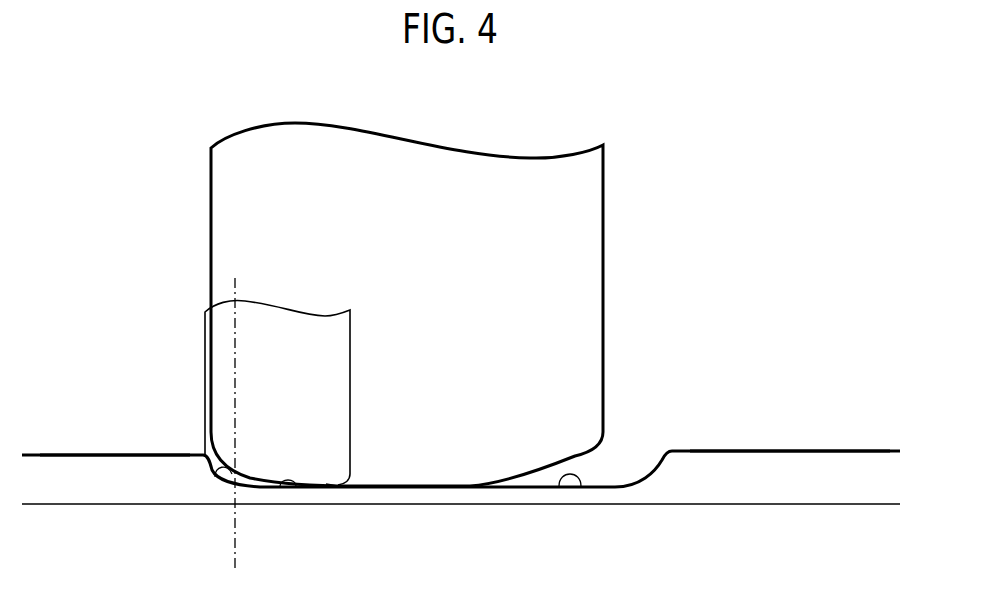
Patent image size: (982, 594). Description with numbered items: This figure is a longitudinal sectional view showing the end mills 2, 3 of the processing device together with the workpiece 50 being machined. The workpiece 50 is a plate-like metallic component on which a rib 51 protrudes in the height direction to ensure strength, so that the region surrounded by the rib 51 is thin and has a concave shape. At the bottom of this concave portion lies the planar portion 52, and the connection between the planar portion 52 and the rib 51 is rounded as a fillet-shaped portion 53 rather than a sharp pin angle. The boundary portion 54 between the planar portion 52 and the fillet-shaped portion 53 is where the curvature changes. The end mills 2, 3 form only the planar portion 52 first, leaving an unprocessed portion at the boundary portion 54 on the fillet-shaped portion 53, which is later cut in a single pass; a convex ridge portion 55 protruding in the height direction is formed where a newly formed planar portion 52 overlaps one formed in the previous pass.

The end mill 2 is at (482, 185).
The end mill 3 is at (300, 328).
The workpiece 50 is at (802, 451).
The rib 51 is at (96, 453).
The planar portion 52 is at (290, 489).
The fillet-shaped portion 53 is at (228, 478).
The boundary portion 54 is at (237, 333).
The convex ridge portion 55 is at (330, 483).